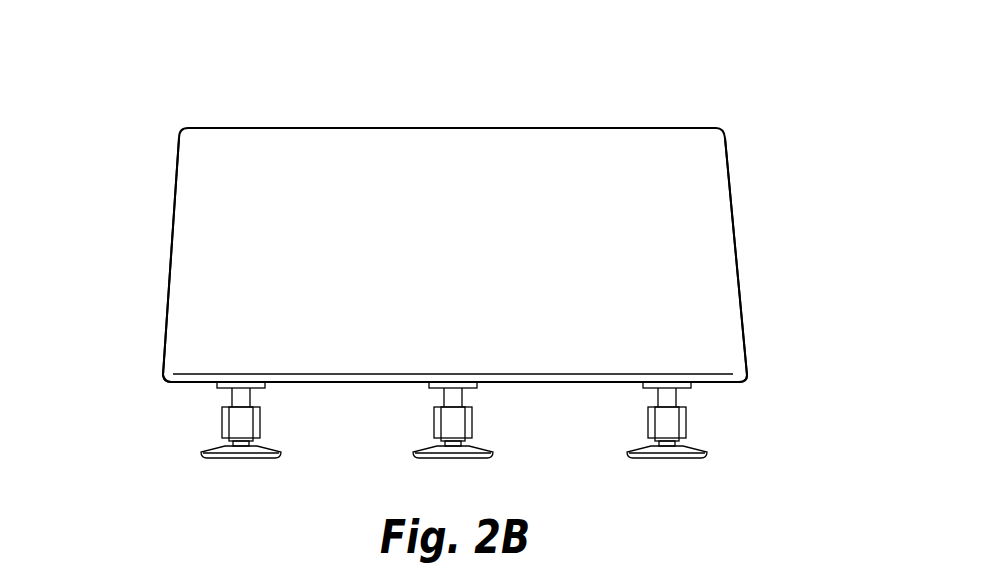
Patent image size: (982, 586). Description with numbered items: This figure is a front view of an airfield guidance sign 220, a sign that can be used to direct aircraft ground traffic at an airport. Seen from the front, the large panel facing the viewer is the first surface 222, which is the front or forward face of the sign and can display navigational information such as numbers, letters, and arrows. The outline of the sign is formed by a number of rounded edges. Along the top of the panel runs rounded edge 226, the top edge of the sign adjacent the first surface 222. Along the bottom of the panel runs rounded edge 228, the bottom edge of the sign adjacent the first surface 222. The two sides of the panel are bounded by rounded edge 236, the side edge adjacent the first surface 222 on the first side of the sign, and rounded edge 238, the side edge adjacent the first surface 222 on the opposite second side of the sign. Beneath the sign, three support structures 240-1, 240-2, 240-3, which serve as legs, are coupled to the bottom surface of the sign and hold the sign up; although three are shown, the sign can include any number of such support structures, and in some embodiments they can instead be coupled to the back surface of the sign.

The airfield guidance sign 220 is at (150, 87).
The first surface 222 is at (402, 223).
The rounded edge 226 is at (484, 128).
The rounded edge 236 is at (173, 262).
The rounded edge 238 is at (733, 262).
The rounded edge 228 is at (165, 378).
The support structure 240-1 is at (240, 448).
The support structure 240-2 is at (452, 448).
The support structure 240-3 is at (666, 448).